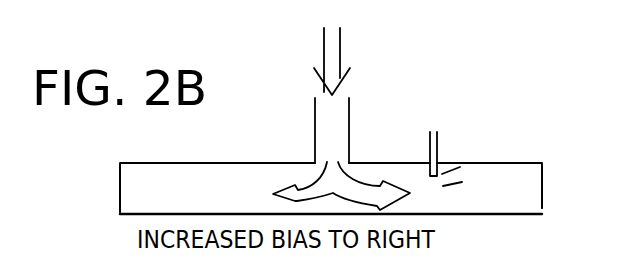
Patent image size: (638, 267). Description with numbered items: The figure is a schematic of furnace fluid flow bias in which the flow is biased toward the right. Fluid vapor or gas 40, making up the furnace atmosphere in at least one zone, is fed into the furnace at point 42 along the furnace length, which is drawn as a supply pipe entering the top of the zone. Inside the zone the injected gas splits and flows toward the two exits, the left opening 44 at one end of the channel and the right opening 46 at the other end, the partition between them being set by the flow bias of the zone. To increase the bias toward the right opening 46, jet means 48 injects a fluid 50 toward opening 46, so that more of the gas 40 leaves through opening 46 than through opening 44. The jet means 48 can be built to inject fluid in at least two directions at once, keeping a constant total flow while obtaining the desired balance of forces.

The fluid vapor or gas 40 is at (337, 50).
The injection point 42 is at (318, 187).
The left opening 44 is at (118, 210).
The right opening 46 is at (543, 207).
The jet means 48 is at (436, 148).
The injected fluid 50 is at (448, 185).